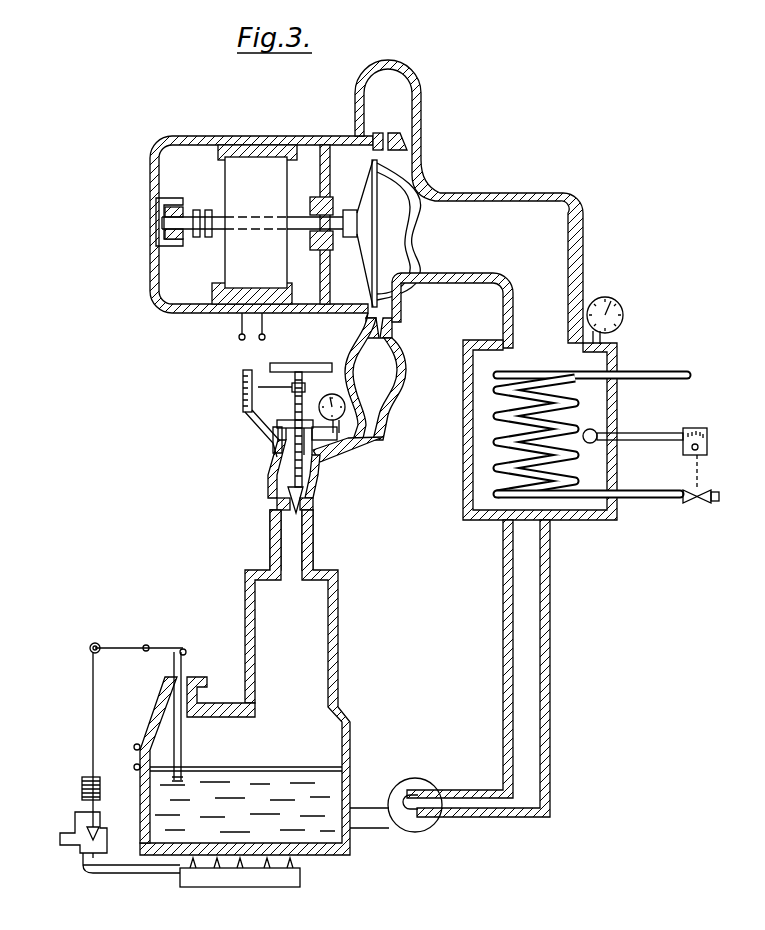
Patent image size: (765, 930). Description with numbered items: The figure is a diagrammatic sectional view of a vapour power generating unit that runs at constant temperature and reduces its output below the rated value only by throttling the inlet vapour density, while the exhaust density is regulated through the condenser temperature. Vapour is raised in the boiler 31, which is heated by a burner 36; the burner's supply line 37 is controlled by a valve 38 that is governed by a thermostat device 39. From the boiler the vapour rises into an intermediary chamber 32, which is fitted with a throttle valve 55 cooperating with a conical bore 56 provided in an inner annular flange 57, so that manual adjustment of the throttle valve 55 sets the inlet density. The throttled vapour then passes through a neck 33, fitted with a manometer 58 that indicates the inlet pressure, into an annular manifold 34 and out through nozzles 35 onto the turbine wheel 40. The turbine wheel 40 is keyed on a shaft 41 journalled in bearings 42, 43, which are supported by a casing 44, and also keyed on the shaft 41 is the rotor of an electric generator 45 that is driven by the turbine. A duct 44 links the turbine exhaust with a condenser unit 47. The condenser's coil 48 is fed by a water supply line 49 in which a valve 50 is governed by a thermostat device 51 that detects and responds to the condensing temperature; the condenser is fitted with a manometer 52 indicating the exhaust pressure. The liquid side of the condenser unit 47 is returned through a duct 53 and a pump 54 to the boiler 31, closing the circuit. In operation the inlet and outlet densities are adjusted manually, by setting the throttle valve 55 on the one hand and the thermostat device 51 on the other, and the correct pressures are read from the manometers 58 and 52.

The boiler 31 is at (338, 668).
The intermediary chamber 32 is at (318, 497).
The neck 33 is at (340, 447).
The annular manifold 34 is at (390, 367).
The nozzles 35 is at (393, 143).
The burner 36 is at (301, 878).
The supply line 37 is at (110, 873).
The valve 38 is at (72, 812).
The thermostat device 39 is at (157, 646).
The turbine wheel 40 is at (413, 203).
The shaft 41 is at (296, 222).
The bearing 42 is at (173, 207).
The bearing 43 is at (332, 206).
The casing / duct 44 is at (217, 138).
The electric generator 45 is at (276, 165).
The condenser unit 47 is at (625, 354).
The coil 48 is at (527, 372).
The water supply line 49 is at (640, 500).
The valve 50 is at (696, 503).
The thermostat device 51 is at (628, 436).
The manometer 52 is at (619, 306).
The duct 53 is at (550, 626).
The pump 54 is at (430, 828).
The throttle valve 55 is at (294, 468).
The conical bore 56 is at (309, 504).
The inner annular flange 57 is at (280, 503).
The manometer 58 is at (329, 394).